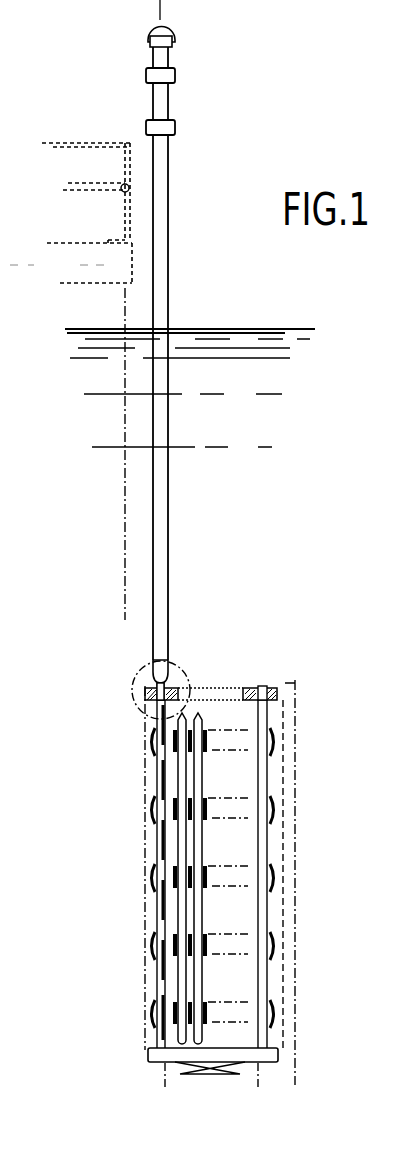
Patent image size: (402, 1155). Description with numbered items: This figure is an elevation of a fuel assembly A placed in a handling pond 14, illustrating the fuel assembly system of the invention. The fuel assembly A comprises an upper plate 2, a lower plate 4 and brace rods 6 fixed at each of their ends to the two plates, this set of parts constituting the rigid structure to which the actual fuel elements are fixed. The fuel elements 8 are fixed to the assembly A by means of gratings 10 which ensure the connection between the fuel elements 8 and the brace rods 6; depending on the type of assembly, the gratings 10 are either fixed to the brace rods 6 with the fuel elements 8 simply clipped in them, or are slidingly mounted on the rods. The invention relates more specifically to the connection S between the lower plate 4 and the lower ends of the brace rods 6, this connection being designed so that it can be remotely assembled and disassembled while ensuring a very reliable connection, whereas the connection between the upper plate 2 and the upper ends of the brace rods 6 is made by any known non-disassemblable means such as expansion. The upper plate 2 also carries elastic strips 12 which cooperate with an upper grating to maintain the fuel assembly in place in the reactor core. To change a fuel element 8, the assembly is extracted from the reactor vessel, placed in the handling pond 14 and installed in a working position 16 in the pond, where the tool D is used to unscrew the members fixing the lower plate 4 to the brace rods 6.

The handling pond 14 is at (307, 390).
The tool D is at (186, 503).
The connection S is at (179, 667).
The lower plate 4 is at (216, 688).
The working position 16 is at (278, 706).
The fuel assembly A is at (272, 776).
The brace rods 6 is at (262, 833).
The fuel elements 8 is at (198, 851).
The gratings 10 is at (274, 888).
The elastic strips 12 is at (226, 1072).
The upper plate 2 is at (262, 1057).